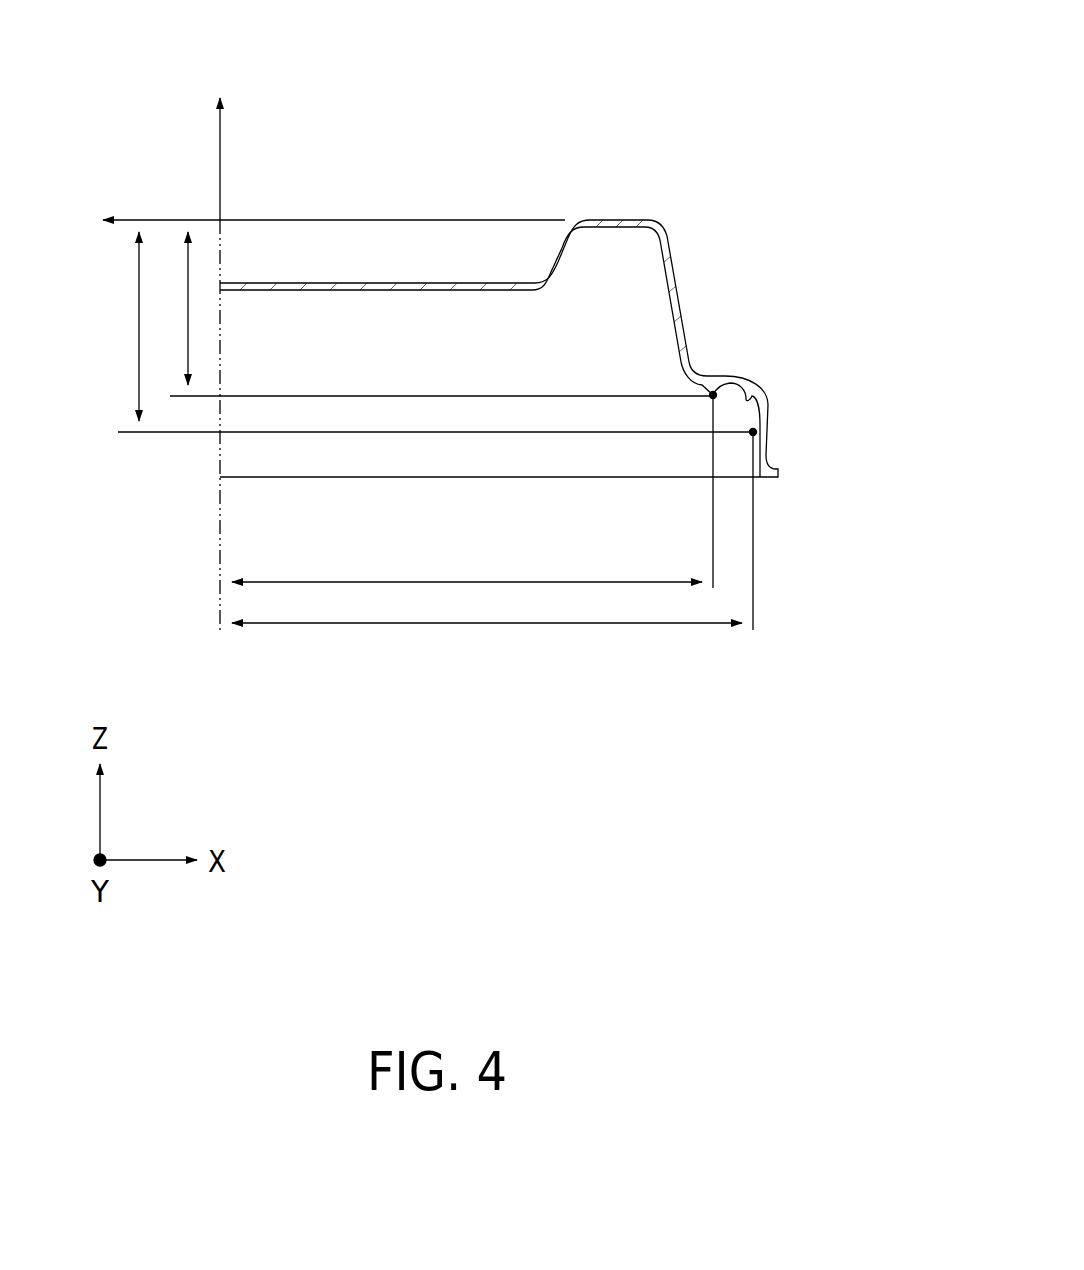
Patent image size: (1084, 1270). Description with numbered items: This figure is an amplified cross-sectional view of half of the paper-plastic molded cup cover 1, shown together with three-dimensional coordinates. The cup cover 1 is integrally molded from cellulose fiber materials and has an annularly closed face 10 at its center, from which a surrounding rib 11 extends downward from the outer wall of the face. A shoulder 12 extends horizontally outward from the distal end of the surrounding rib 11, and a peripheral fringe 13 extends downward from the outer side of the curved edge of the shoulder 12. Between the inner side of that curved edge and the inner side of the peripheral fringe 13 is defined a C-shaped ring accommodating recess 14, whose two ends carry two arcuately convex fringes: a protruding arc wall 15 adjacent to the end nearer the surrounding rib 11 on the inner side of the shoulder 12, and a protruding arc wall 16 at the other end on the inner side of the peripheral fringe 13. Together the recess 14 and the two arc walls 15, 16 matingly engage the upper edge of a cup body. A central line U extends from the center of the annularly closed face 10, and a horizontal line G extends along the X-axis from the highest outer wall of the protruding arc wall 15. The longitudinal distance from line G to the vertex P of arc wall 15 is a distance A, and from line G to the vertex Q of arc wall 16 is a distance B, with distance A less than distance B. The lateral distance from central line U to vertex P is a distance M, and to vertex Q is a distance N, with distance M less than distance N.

The paper-plastic molded cup cover 1 is at (571, 281).
The annularly closed face 10 is at (620, 222).
The surrounding rib 11 is at (678, 290).
The shoulder 12 is at (729, 378).
The peripheral fringe 13 is at (765, 427).
The C-shaped ring accommodating recess 14 is at (763, 398).
The protruding arc wall 15 is at (703, 393).
The protruding arc wall 16 is at (760, 435).
The vertex of the protruding arc wall 15 P is at (713, 395).
The vertex of the protruding arc wall 16 Q is at (753, 432).
The distance A is at (188, 320).
The distance B is at (134, 323).
The distance M is at (478, 582).
The distance N is at (446, 623).
The horizontal line G is at (319, 221).
The central line U is at (220, 348).